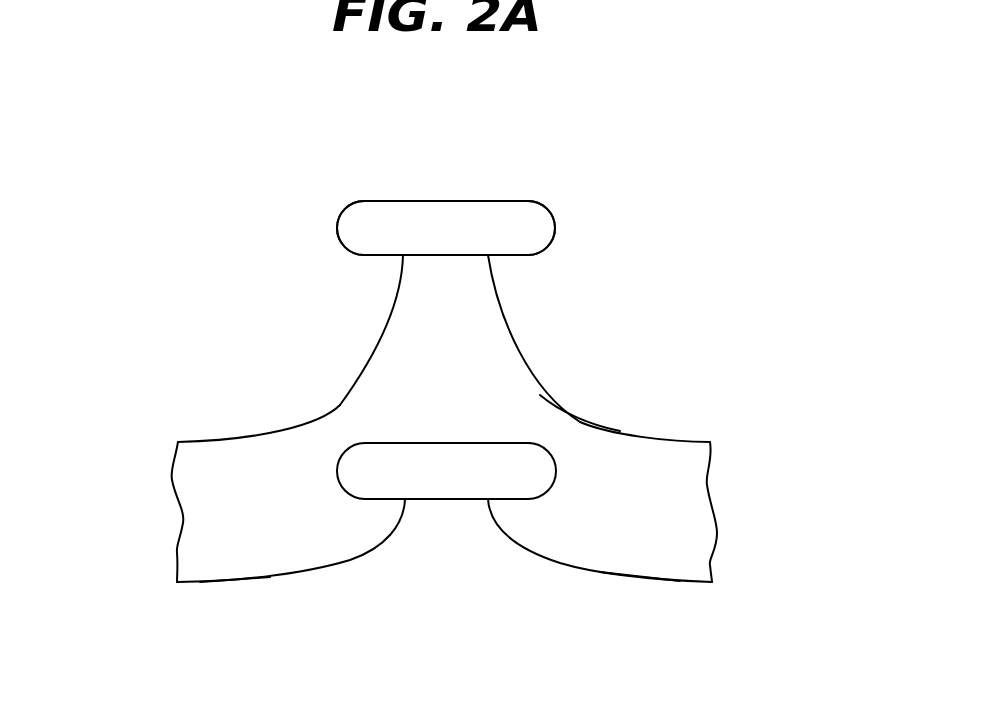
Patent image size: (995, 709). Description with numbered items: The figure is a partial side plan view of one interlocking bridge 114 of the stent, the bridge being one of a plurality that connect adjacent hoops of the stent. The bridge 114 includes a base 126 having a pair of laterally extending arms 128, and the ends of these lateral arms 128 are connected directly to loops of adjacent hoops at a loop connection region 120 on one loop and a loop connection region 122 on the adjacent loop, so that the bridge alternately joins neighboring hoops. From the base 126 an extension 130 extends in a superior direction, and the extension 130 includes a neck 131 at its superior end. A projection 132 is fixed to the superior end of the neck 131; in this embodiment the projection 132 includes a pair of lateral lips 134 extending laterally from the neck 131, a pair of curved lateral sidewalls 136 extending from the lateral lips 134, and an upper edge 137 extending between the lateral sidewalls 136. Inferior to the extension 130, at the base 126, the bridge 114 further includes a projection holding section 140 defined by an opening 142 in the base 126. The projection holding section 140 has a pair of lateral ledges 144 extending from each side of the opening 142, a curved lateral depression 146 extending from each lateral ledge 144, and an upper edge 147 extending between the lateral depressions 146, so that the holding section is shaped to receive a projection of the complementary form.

The interlocking bridge 114 is at (748, 215).
The loop connection region 120 is at (190, 508).
The loop connection region 122 is at (698, 523).
The base 126 is at (557, 440).
The laterally extending arms 128 is at (237, 567).
The extension 130 is at (405, 323).
The neck 131 is at (423, 277).
The projection 132 is at (466, 198).
The lateral lips 134 is at (515, 256).
The lateral sidewalls 136 is at (338, 215).
The upper edge 137 is at (527, 201).
The projection holding section 140 is at (426, 443).
The opening 142 is at (448, 490).
The lateral ledges 144 is at (368, 500).
The lateral depressions 146 is at (548, 492).
The upper edge 147 is at (373, 443).